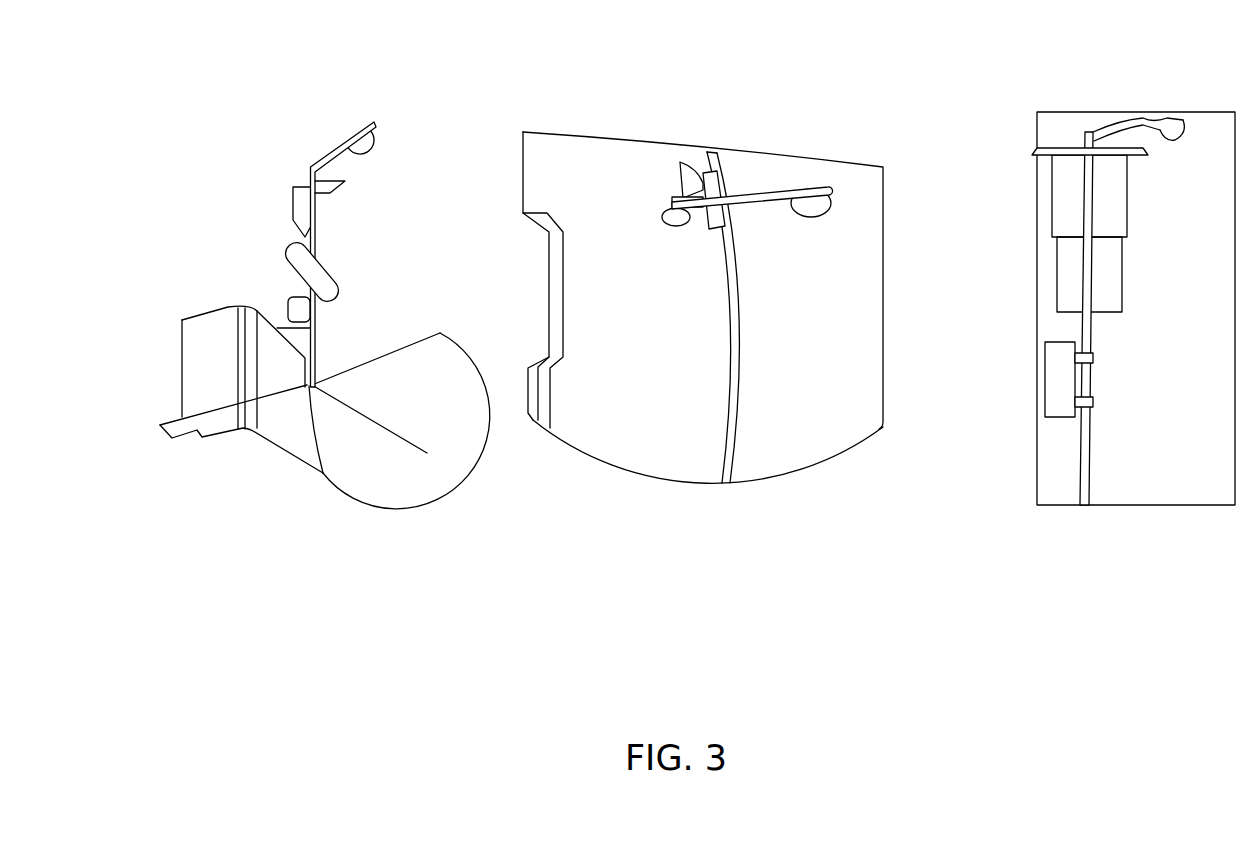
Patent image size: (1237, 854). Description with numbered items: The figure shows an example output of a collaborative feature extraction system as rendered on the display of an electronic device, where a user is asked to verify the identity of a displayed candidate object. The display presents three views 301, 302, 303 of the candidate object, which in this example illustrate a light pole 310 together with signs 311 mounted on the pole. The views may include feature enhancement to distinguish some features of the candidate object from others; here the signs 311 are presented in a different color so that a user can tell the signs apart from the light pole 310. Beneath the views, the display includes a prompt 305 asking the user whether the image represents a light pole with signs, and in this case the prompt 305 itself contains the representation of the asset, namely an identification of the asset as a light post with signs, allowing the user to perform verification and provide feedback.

The view 301 is at (211, 151).
The view 302 is at (585, 105).
The view 303 is at (1018, 89).
The prompt 305 is at (441, 629).
The light pole 310 is at (339, 134).
The signs 311 is at (276, 254).